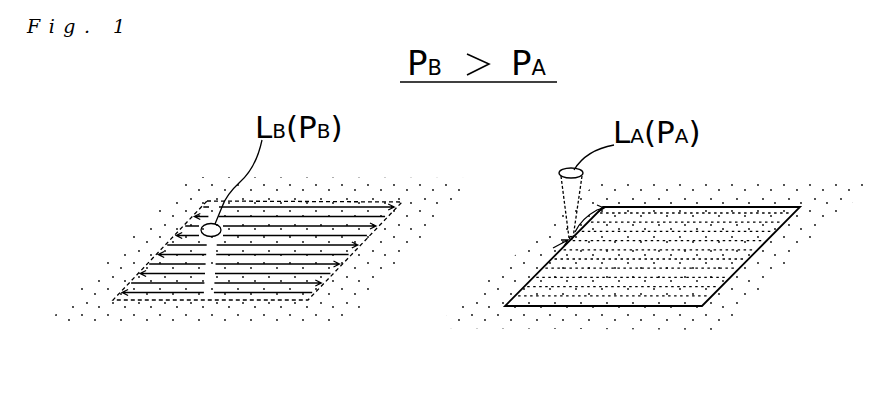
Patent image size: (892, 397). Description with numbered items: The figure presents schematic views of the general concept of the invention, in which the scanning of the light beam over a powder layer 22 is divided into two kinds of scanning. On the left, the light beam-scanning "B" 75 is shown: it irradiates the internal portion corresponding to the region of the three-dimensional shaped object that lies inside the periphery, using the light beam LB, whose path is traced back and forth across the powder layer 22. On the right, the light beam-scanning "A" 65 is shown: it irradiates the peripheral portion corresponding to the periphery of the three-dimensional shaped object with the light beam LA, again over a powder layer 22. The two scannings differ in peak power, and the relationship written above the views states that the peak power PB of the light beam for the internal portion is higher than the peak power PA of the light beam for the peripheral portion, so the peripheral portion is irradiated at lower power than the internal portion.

The powder layer 22 is at (446, 211).
The light beam-scanning "B" 75 is at (266, 306).
The light beam-scanning "A" 65 is at (629, 316).